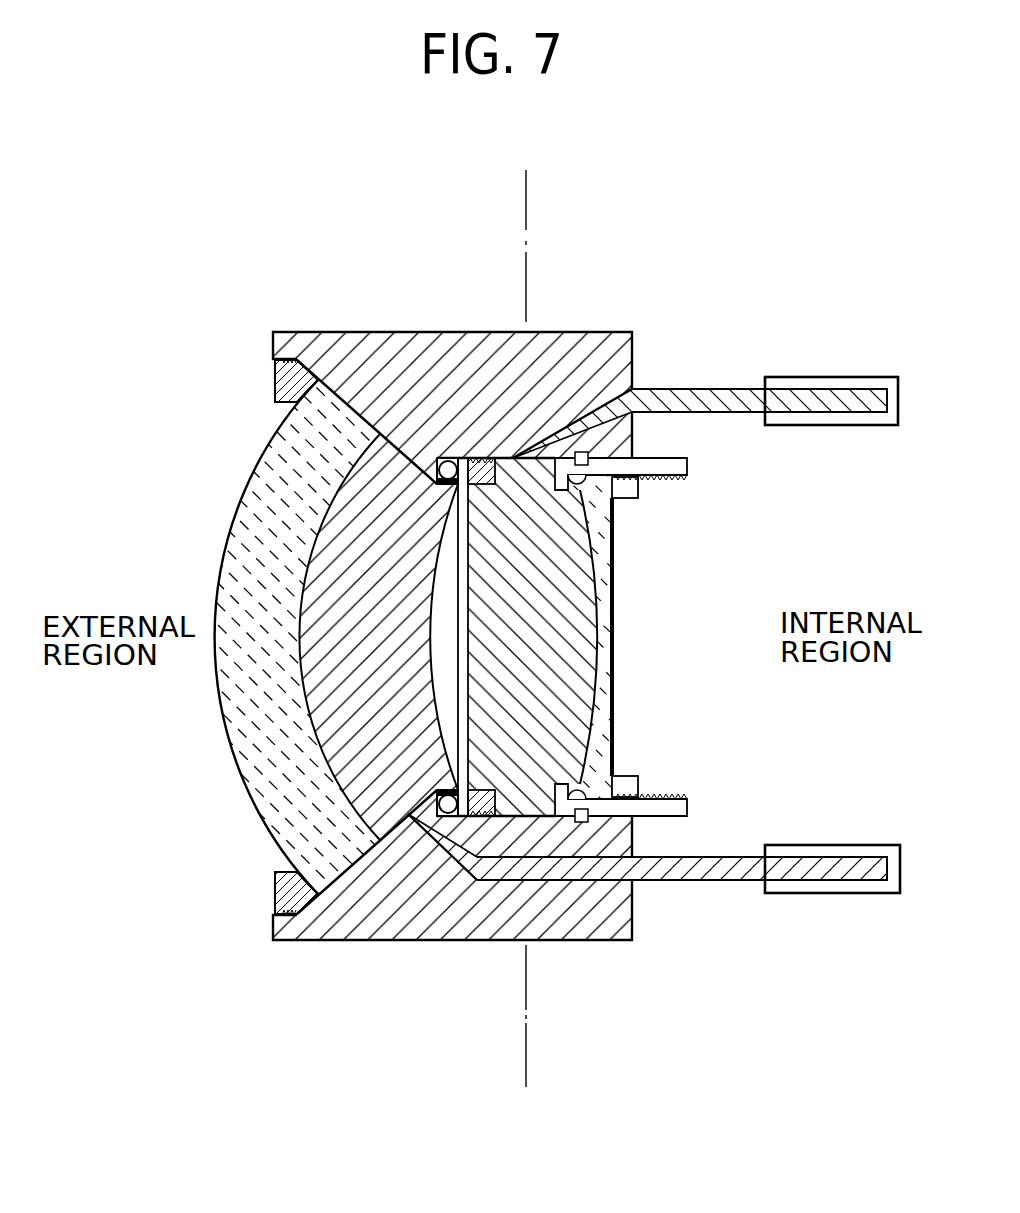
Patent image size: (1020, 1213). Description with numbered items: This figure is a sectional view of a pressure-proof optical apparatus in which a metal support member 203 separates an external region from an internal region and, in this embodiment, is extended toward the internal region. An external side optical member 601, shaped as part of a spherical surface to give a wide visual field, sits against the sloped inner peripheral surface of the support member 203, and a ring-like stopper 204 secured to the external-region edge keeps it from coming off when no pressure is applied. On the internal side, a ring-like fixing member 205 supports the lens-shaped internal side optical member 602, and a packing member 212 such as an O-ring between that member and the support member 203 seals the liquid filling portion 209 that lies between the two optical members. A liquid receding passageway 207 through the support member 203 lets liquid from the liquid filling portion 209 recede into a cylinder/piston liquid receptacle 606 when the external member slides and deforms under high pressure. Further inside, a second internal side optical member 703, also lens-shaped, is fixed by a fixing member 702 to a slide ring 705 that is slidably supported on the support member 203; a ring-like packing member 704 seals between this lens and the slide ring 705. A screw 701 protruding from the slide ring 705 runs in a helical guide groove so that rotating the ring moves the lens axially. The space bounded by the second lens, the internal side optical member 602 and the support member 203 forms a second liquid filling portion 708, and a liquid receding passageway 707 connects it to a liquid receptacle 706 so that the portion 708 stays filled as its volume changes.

The support member 203 is at (607, 350).
The ring-like stopper 204 is at (282, 372).
The ring-like fixing member 205 is at (482, 458).
The liquid receding passageway 207 is at (412, 886).
The liquid filling portion 209 is at (446, 640).
The packing member 212 is at (440, 458).
The external side optical member 601 is at (250, 490).
The internal side optical member 602 is at (438, 670).
The liquid receptacle 606 is at (804, 852).
The screw 701 is at (590, 453).
The fixing member 702 is at (634, 489).
The second internal side optical member 703 is at (606, 668).
The ring-like packing member 704 is at (583, 483).
The slide ring 705 is at (673, 467).
The liquid receptacle 706 is at (848, 377).
The liquid receding passageway 707 is at (583, 440).
The second liquid filling portion 708 is at (570, 578).